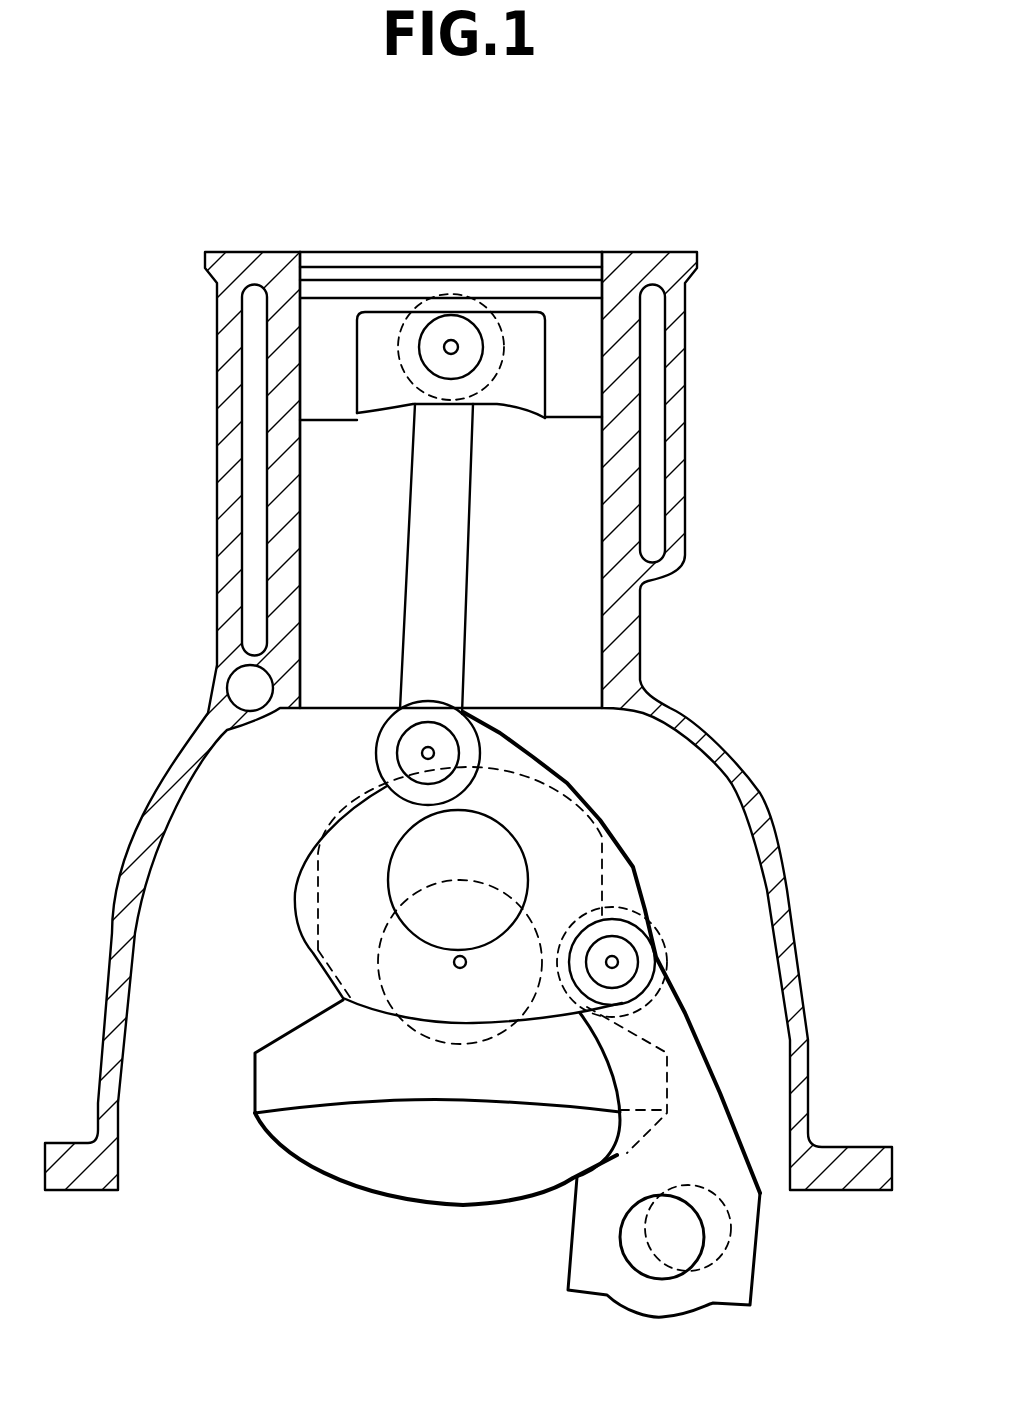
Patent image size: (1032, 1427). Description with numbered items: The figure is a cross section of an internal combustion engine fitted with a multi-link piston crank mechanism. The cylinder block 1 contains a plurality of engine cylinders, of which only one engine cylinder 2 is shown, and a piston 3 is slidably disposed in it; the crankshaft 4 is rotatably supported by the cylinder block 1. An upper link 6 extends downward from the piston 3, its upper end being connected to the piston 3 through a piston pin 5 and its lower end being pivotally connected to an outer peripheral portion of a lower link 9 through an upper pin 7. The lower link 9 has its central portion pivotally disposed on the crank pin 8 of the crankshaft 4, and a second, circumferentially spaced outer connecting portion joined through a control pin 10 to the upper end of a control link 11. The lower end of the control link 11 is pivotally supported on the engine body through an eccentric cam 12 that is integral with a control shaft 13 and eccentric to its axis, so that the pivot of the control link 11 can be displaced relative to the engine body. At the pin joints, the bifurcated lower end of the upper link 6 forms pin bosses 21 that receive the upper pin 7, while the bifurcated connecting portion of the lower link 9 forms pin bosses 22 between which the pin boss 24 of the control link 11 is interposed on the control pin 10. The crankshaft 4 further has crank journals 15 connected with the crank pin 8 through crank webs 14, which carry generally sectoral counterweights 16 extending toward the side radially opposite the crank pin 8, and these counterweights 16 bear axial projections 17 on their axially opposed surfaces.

The cylinder block 1 is at (637, 653).
The engine cylinder 2 is at (600, 487).
The piston 3 is at (593, 365).
The crankshaft 4 is at (392, 1048).
The piston pin 5 is at (451, 322).
The upper link 6 is at (458, 522).
The upper pin 7 is at (400, 745).
The crank pin 8 is at (388, 878).
The lower link 9 is at (305, 928).
The control pin 10 is at (625, 965).
The control link 11 is at (710, 1133).
The eccentric cam 12 is at (623, 1243).
The control shaft 13 is at (728, 1240).
The crank web 14 is at (567, 802).
The crank journal 15 is at (318, 957).
The counterweight 16 is at (262, 1070).
The axial projection 17 is at (253, 1117).
The pin boss 21 is at (468, 712).
The pin boss 22 is at (643, 938).
The pin boss 24 is at (653, 993).